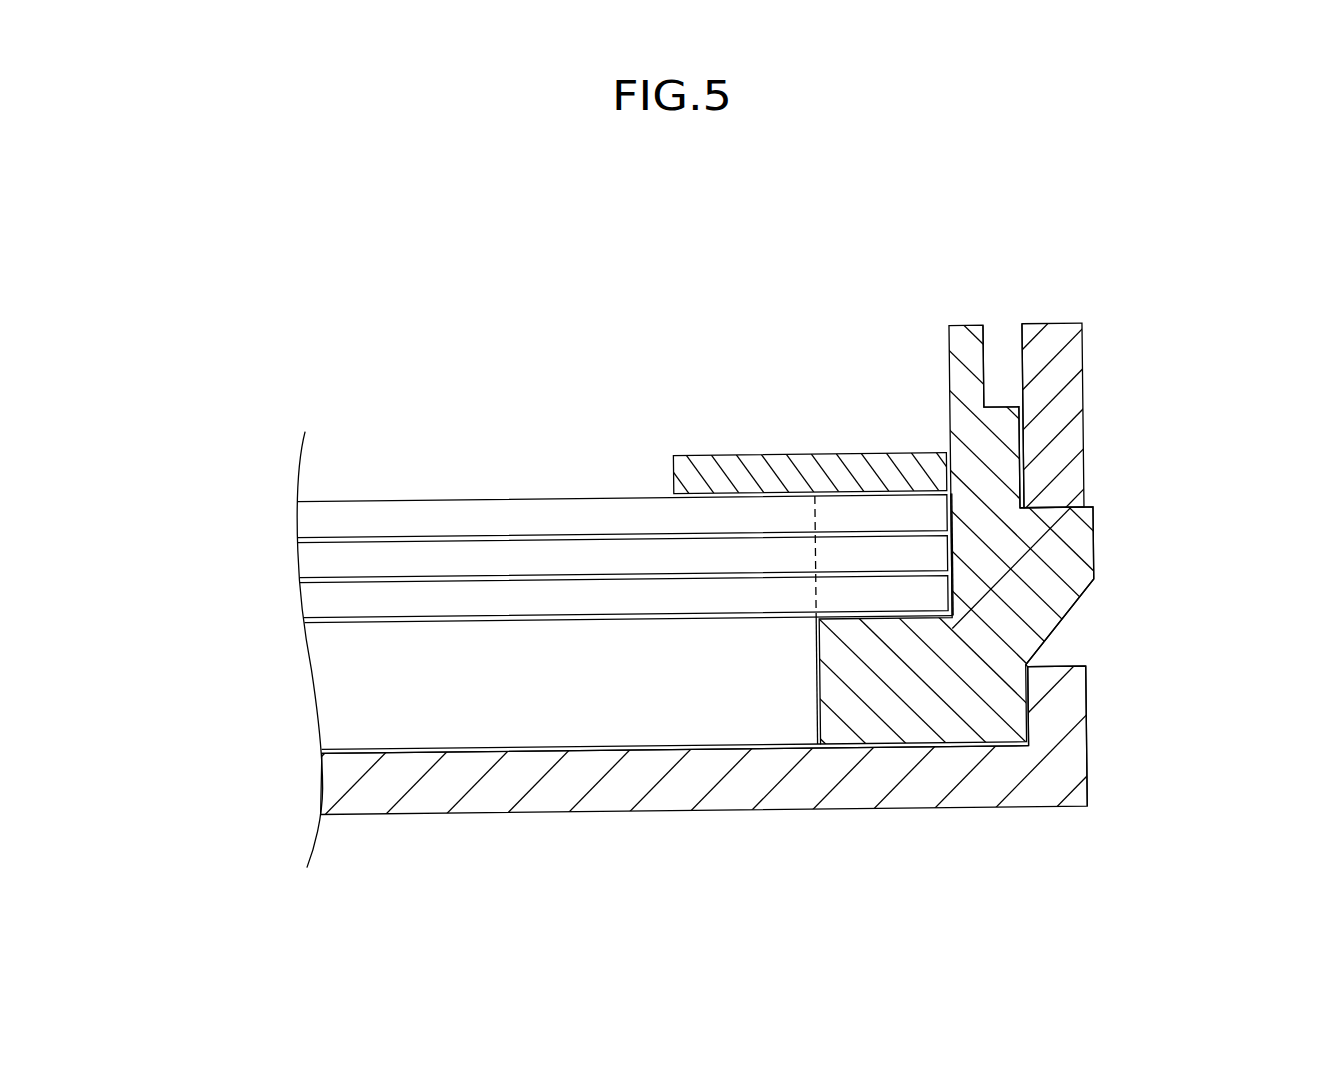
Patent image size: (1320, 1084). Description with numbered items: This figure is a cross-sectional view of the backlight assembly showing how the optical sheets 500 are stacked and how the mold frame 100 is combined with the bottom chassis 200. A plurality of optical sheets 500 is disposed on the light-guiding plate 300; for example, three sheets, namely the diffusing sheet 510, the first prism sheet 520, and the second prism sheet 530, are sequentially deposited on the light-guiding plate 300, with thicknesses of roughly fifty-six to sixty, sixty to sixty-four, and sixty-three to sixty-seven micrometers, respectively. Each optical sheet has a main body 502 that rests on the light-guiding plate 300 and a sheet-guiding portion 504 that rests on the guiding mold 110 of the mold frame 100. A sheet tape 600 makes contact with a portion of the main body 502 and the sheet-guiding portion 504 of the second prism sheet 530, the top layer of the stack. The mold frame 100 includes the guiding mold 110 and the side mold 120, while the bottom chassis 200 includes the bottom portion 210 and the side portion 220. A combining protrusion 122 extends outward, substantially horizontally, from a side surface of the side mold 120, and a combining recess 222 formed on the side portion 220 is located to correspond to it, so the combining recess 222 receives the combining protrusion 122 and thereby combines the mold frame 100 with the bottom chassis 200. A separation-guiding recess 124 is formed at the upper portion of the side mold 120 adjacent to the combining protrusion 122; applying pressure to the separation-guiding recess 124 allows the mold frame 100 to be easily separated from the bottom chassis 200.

The mold frame 100 is at (849, 528).
The guiding mold 110 is at (933, 648).
The side mold 120 is at (987, 481).
The combining protrusion 122 is at (1083, 547).
The separation-guiding recess 124 is at (1017, 368).
The bottom chassis 200 is at (742, 769).
The bottom portion 210 is at (976, 790).
The side portion 220 is at (1067, 707).
The combining recess 222 is at (1068, 652).
The light-guiding plate 300 is at (330, 693).
The optical sheets 500 is at (539, 556).
The diffusing sheet 510 is at (313, 603).
The first prism sheet 520 is at (313, 563).
The second prism sheet 530 is at (313, 522).
The main body 502 is at (773, 505).
The sheet-guiding portion 504 is at (866, 505).
The sheet tape 600 is at (711, 468).